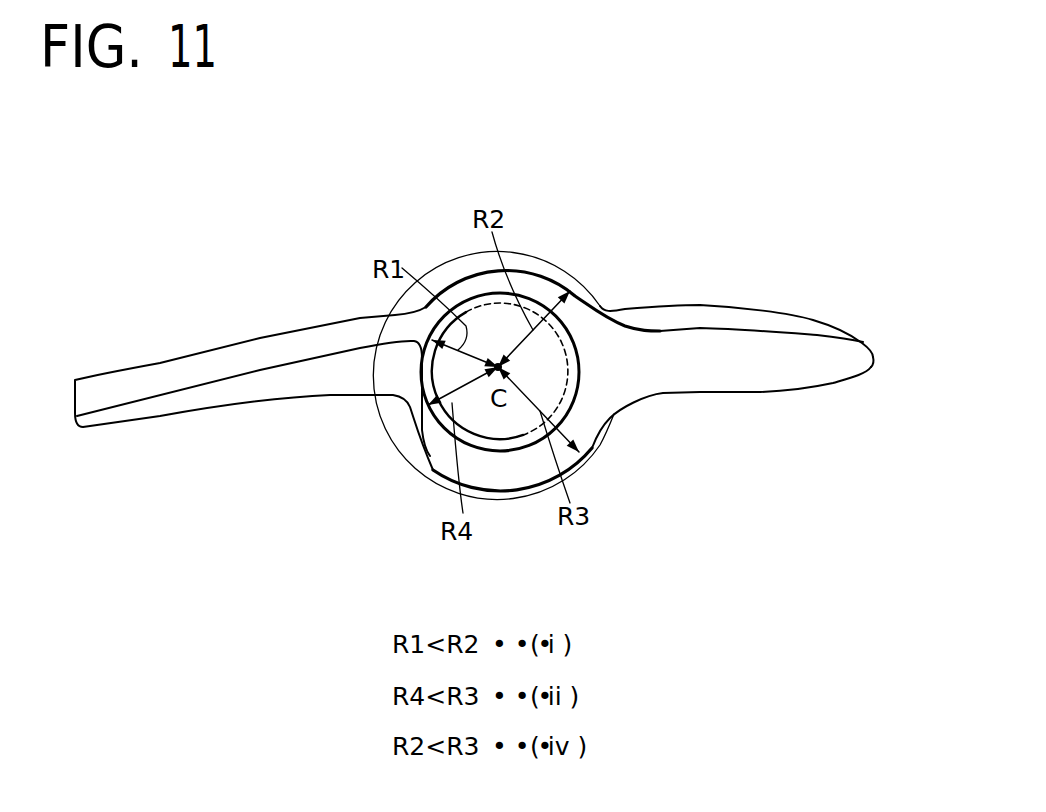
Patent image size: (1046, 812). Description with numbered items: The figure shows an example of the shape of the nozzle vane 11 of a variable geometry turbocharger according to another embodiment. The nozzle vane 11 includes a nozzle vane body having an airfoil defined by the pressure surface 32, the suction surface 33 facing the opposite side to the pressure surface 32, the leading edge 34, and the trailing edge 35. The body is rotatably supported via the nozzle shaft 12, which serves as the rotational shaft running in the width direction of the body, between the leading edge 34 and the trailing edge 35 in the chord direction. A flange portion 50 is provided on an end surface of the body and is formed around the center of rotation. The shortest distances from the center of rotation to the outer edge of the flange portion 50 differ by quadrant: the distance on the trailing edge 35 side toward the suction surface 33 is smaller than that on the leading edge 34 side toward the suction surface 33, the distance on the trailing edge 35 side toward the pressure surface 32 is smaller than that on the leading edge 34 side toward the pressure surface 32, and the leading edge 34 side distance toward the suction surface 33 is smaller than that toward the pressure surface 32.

The nozzle vane 11 is at (643, 188).
The nozzle shaft 12 is at (560, 320).
The pressure surface 32 is at (737, 394).
The suction surface 33 is at (735, 313).
The leading edge 34 is at (873, 350).
The trailing edge 35 is at (75, 411).
The flange portion 50 is at (538, 273).